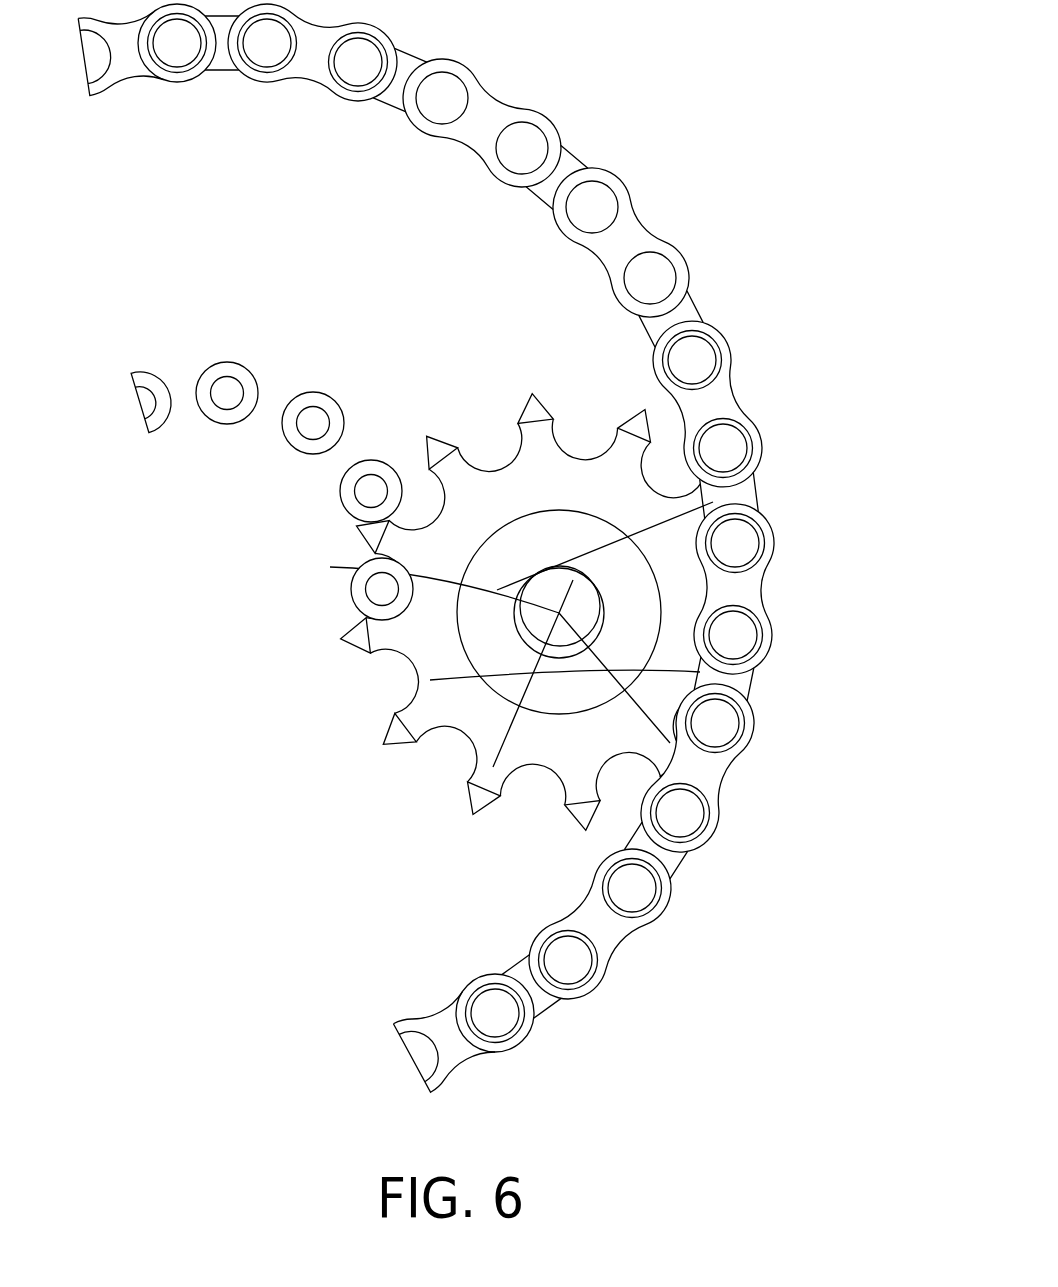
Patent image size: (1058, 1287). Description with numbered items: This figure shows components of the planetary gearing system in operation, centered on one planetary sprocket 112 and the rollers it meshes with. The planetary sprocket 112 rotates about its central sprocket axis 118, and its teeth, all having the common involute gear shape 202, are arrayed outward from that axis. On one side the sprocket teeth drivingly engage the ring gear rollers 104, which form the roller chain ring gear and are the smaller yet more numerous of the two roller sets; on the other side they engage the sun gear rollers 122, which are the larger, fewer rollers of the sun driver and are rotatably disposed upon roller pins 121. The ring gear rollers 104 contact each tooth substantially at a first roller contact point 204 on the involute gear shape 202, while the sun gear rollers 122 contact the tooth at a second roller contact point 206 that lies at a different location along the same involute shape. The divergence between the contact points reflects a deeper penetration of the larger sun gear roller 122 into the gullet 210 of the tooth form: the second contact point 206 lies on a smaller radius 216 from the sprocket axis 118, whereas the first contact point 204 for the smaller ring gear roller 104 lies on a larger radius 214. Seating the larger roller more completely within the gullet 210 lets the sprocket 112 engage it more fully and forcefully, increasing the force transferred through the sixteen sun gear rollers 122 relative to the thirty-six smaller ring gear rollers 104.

The ring gear rollers 104 is at (670, 243).
The planetary sprocket 112 is at (617, 431).
The central sprocket axis 118 is at (430, 680).
The roller pin 121 is at (312, 423).
The sun gear rollers 122 is at (342, 492).
The common involute gear shape 202 is at (545, 411).
The first roller contact point 204 is at (376, 553).
The second roller contact point 206 is at (413, 535).
The gullet 210 is at (462, 728).
The larger radius 214 is at (430, 680).
The smaller radius 216 is at (713, 502).